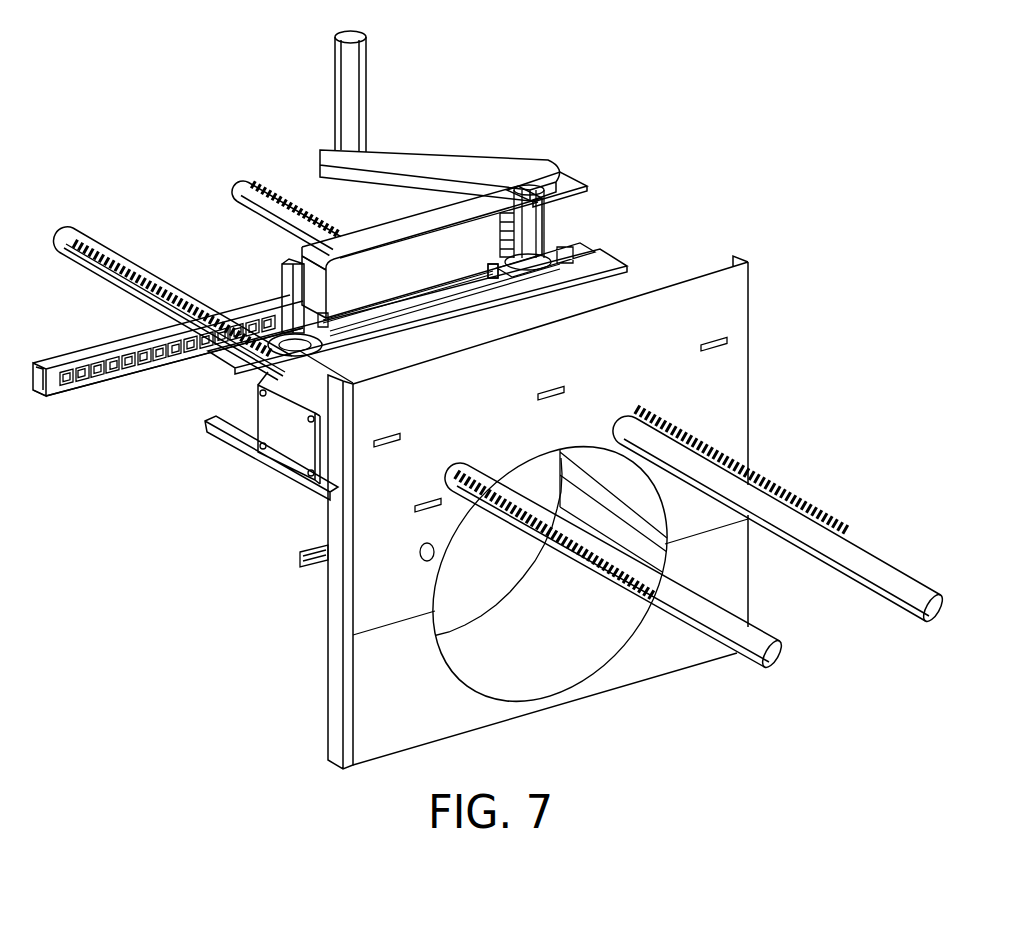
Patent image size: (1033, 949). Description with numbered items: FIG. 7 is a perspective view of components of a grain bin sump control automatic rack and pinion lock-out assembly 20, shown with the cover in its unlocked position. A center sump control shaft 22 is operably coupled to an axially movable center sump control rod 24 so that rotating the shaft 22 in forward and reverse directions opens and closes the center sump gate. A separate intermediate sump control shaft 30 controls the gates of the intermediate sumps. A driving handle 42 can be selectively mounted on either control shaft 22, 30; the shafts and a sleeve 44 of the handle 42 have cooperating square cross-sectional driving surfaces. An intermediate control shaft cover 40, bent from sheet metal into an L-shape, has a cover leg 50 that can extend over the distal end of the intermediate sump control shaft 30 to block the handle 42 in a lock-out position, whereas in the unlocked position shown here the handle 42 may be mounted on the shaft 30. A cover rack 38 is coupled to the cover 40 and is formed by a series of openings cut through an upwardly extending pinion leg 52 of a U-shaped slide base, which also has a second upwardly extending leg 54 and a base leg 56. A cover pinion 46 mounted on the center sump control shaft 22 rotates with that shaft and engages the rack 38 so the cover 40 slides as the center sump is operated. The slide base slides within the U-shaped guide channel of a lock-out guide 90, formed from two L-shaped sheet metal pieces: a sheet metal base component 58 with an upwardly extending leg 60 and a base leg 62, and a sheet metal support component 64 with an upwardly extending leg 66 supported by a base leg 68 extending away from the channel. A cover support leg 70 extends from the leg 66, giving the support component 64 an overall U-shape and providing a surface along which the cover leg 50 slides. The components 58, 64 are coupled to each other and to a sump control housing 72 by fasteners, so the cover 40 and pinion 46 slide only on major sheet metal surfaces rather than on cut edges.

The grain bin sump control automatic rack and pinion lock-out assembly 20 is at (196, 92).
The center sump control shaft 22 is at (280, 262).
The center sump control rod 24 is at (88, 238).
The intermediate sump control shaft 30 is at (587, 262).
The cover rack 38 is at (135, 383).
The intermediate control shaft cover 40 is at (343, 232).
The driving handle 42 is at (460, 150).
The sleeve 44 is at (540, 217).
The cover pinion 46 is at (284, 298).
The cover leg 50 is at (397, 230).
The pinion leg 52 is at (57, 390).
The upwardly extending leg 54 is at (40, 362).
The base leg 56 is at (62, 380).
The sheet metal base component 58 is at (222, 386).
The upwardly extending leg 60 is at (228, 322).
The base leg 62 is at (240, 352).
The sheet metal support component 64 is at (453, 202).
The upwardly extending leg 66 is at (423, 267).
The base leg 68 is at (394, 322).
The cover support leg 70 is at (560, 180).
The sump control housing 72 is at (610, 292).
The lock-out guide 90 is at (606, 228).